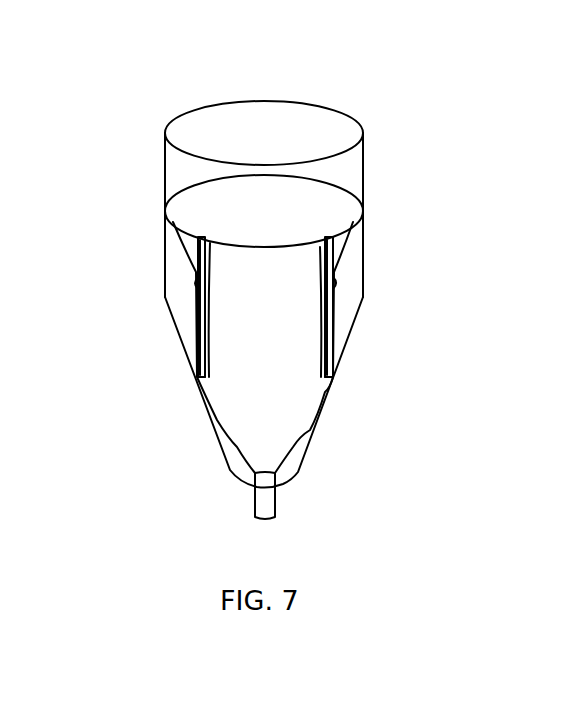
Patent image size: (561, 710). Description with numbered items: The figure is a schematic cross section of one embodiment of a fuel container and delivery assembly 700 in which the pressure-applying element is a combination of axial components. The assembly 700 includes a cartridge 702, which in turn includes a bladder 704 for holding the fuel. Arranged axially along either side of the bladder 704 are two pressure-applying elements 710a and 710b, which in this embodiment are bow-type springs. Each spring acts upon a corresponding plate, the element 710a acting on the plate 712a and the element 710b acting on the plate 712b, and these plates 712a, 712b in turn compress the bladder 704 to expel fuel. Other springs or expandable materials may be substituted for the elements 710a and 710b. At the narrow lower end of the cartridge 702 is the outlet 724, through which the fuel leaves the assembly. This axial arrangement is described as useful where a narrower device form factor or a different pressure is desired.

The assembly 700 is at (285, 43).
The cartridge 702 is at (365, 245).
The bladder 704 is at (308, 238).
The pressure-applying element 710a is at (334, 287).
The pressure-applying element 710b is at (199, 289).
The plate 712a is at (335, 378).
The plate 712b is at (197, 380).
The outlet tube 724 is at (276, 503).